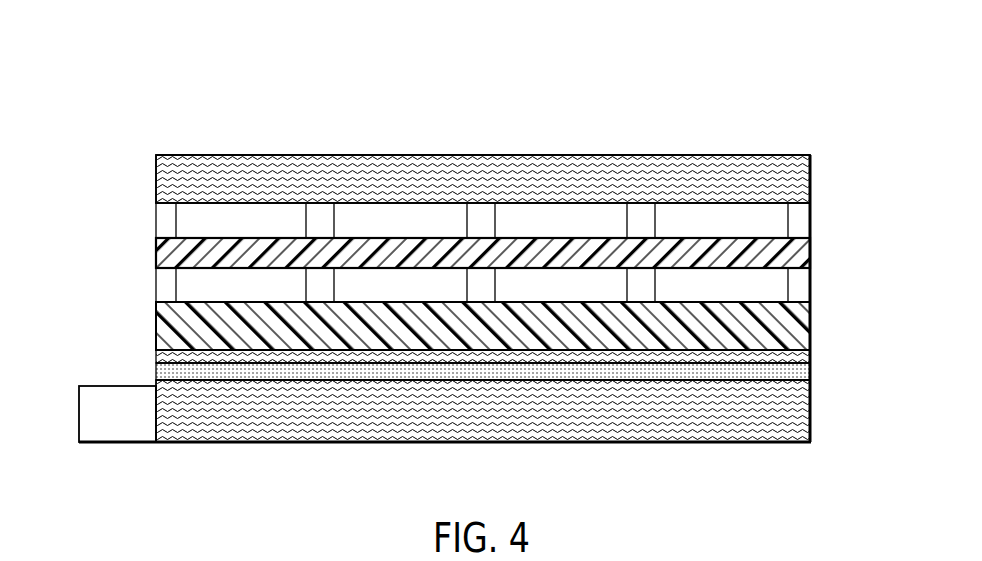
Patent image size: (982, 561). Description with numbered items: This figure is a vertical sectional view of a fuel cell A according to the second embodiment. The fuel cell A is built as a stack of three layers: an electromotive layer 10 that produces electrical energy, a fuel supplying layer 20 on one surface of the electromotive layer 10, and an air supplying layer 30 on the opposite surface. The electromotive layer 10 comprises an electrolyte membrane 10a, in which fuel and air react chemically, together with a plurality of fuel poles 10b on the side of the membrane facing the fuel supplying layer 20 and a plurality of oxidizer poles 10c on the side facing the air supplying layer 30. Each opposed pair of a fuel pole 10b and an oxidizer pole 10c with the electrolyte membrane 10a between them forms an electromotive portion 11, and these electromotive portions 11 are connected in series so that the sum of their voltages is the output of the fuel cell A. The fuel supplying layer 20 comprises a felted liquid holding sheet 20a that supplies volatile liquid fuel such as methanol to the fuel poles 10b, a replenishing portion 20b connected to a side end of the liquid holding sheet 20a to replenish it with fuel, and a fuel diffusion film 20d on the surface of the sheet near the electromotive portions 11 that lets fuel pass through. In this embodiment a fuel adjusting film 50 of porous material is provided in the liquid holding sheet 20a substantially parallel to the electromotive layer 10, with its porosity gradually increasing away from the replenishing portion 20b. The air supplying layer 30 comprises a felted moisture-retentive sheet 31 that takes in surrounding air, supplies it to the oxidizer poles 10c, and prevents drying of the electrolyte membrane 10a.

The fuel cell A is at (693, 66).
The electromotive layer 10 is at (820, 203).
The electrolyte membrane 10a is at (158, 253).
The fuel poles 10b is at (293, 278).
The oxidizer poles 10c is at (252, 208).
The electromotive portions 11 is at (313, 219).
The fuel supplying layer 20 is at (820, 303).
The liquid holding sheet 20a is at (227, 422).
The replenishing portion 20b is at (120, 420).
The fuel diffusion film 20d is at (160, 328).
The air supplying layer 30 is at (820, 155).
The moisture-retentive sheet 31 is at (212, 155).
The fuel adjusting film 50 is at (527, 383).